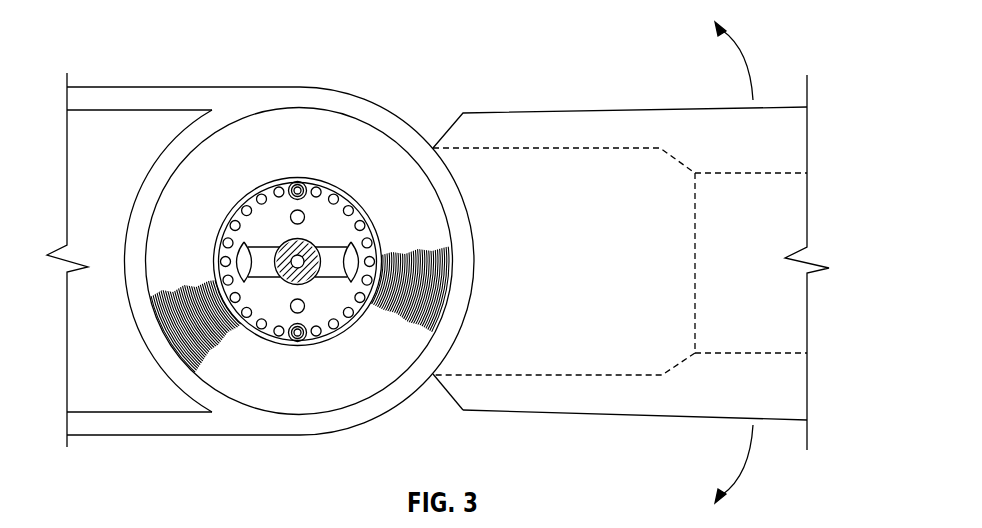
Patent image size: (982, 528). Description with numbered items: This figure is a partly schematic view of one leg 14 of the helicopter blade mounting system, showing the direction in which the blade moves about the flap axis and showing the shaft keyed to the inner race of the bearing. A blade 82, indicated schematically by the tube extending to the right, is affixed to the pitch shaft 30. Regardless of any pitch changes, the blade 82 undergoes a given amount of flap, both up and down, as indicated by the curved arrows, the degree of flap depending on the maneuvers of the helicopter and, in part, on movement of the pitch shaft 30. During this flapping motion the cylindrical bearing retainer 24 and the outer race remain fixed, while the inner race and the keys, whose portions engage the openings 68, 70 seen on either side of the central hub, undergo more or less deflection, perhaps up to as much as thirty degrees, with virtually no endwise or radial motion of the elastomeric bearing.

The leg 14 is at (259, 74).
The cylindrical bearing retainer 24 is at (365, 99).
The pitch shaft 30 is at (622, 156).
The opening 68 is at (352, 243).
The opening 70 is at (243, 243).
The blade 82 is at (655, 417).